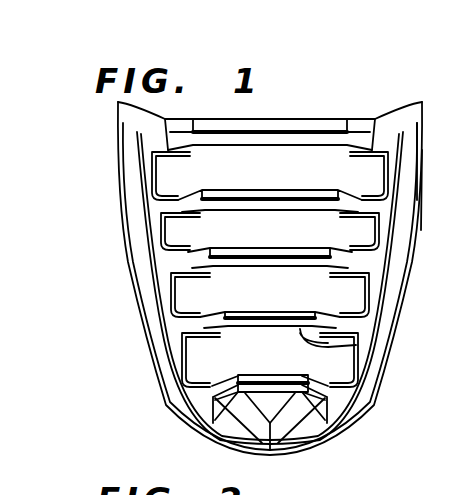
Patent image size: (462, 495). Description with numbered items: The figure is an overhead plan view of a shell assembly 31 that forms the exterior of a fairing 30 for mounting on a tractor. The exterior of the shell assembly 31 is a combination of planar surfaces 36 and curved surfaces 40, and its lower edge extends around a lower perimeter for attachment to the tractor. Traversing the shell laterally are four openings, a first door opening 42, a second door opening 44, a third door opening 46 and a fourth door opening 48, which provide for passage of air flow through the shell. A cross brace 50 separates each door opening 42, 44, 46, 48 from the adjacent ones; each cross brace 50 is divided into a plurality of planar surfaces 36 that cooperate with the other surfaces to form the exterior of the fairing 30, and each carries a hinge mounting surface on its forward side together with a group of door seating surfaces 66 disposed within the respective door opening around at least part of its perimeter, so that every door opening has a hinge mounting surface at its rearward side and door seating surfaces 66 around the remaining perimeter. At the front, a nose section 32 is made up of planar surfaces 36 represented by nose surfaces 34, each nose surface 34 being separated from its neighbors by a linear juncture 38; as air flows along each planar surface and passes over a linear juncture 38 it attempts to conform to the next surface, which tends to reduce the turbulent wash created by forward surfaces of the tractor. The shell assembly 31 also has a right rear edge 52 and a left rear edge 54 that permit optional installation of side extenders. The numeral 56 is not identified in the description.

The fairing 30 is at (441, 190).
The shell assembly 31 is at (133, 418).
The nose section 32 is at (258, 445).
The nose surface 34 is at (289, 435).
The planar surface 36 is at (372, 223).
The linear juncture 38 is at (325, 447).
The curved surface 40 is at (367, 387).
The first door opening 42 is at (213, 355).
The second door opening 44 is at (197, 292).
The third door opening 46 is at (185, 232).
The fourth door opening 48 is at (178, 174).
The cross brace 50 is at (305, 333).
The right rear edge 52 is at (118, 104).
The left rear edge 54 is at (422, 102).
The wall 56 is at (439, 151).
The door seating surface 66 is at (339, 308).